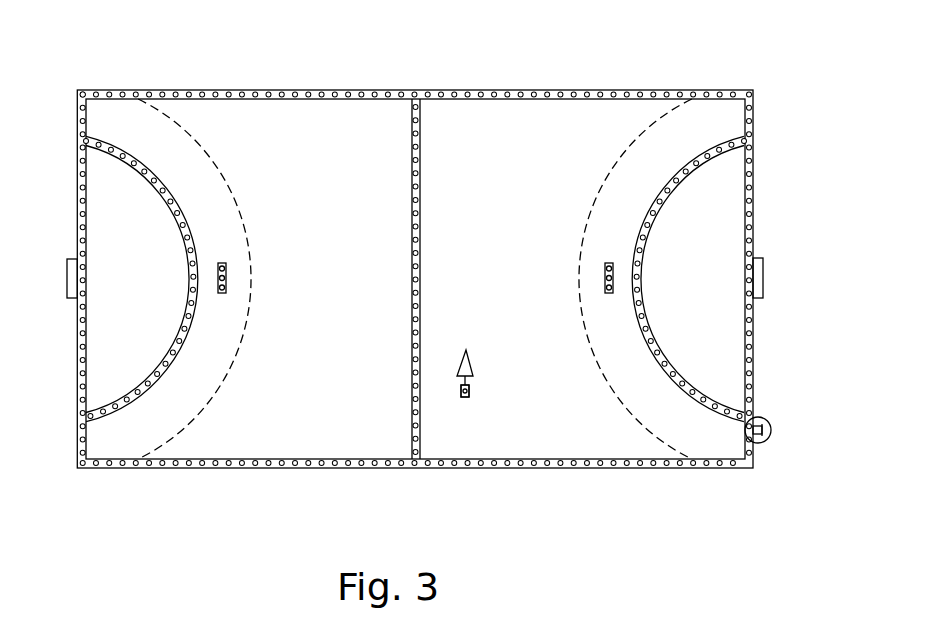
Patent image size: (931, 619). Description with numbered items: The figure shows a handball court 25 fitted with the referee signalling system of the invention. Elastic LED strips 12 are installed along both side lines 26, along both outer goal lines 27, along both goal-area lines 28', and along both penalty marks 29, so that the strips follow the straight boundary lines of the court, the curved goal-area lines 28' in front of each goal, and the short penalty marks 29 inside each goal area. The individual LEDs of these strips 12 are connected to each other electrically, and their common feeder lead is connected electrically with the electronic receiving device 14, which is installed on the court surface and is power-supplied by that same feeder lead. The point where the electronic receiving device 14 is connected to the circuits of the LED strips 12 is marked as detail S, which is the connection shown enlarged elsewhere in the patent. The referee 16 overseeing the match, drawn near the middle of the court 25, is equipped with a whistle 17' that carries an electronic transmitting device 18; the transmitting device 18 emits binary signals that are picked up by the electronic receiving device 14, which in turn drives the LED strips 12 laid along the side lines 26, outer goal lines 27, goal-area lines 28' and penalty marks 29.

The elastic LED strips 12 is at (219, 263).
The electronic receiving device 14 is at (758, 440).
The referee 16 is at (460, 373).
The whistle 17' is at (439, 448).
The electronic transmitting device 18 is at (464, 398).
The handball court 25 is at (157, 343).
The side lines 26 is at (333, 90).
The outer goal lines 27 is at (77, 168).
The goal-area lines 28' is at (415, 246).
The penalty marks 29 is at (223, 265).
The detail of connection S is at (806, 402).